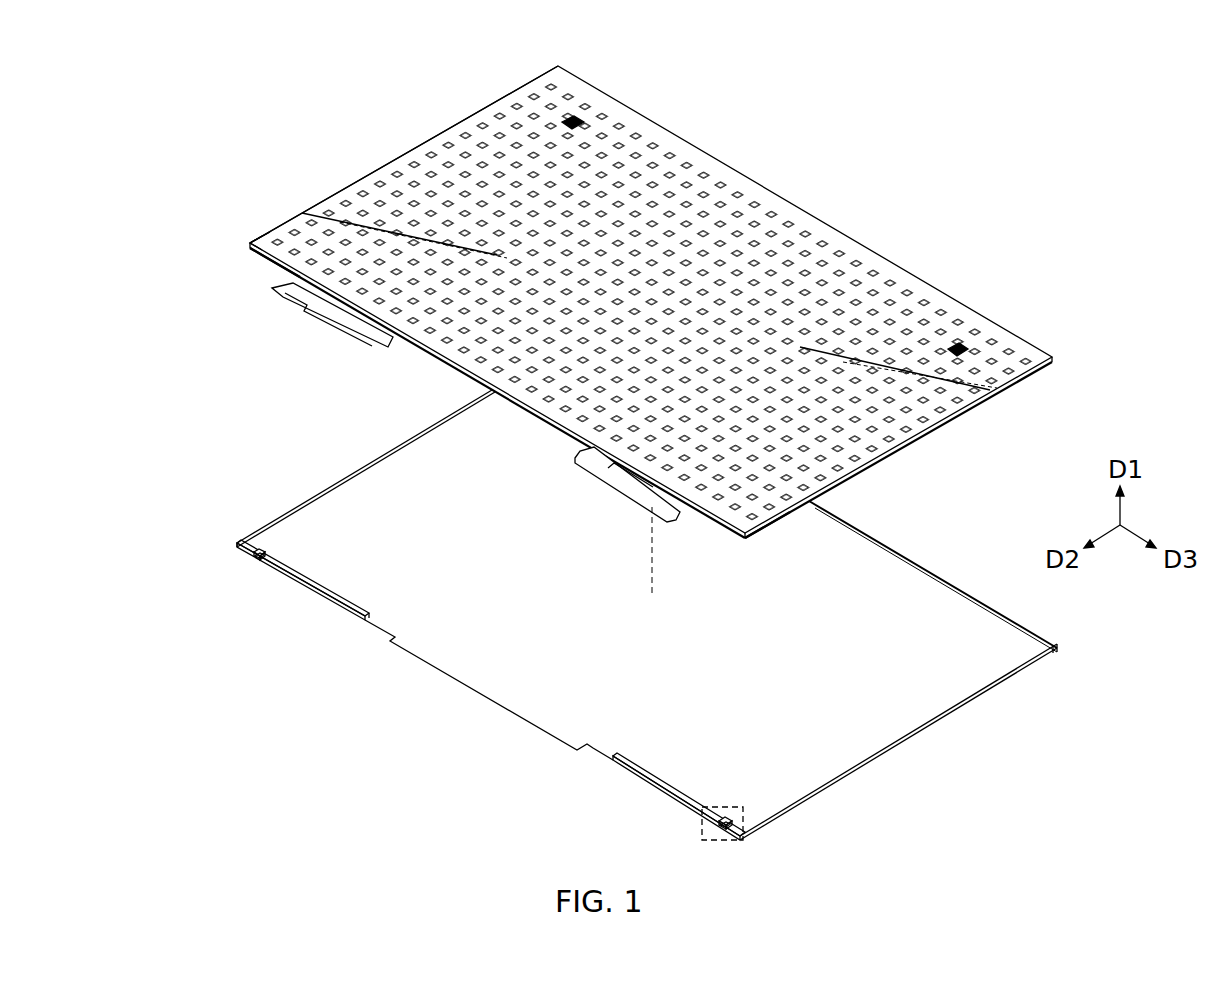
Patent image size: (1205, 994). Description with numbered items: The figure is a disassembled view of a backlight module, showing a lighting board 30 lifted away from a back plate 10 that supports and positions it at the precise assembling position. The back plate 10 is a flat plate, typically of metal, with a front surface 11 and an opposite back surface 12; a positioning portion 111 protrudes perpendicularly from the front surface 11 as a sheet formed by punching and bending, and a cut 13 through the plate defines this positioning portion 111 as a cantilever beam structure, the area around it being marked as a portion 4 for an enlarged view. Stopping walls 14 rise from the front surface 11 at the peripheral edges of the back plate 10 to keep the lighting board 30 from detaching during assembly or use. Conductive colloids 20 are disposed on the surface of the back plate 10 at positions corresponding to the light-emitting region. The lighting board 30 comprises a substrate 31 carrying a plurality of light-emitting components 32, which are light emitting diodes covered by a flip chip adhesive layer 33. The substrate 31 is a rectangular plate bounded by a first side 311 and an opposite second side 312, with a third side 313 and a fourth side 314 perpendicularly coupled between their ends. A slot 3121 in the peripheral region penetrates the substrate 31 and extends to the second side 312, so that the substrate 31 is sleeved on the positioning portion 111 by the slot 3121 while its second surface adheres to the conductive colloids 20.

The back plate 10 is at (624, 643).
The front surface 11 is at (404, 642).
The positioning portion 111 is at (256, 556).
The back surface 12 is at (448, 672).
The cut 13 is at (262, 566).
The stopping wall 14 is at (968, 706).
The conductive colloid 20 is at (580, 118).
The lighting board 30 is at (578, 314).
The substrate 31 is at (247, 247).
The first side 311 is at (840, 226).
The second side 312 is at (525, 390).
The slot 3121 is at (260, 256).
The third side 313 is at (356, 181).
The fourth side 314 is at (963, 413).
The light-emitting component 32 is at (345, 203).
The flip chip adhesive layer 33 is at (252, 241).
The portion 4 is at (745, 819).